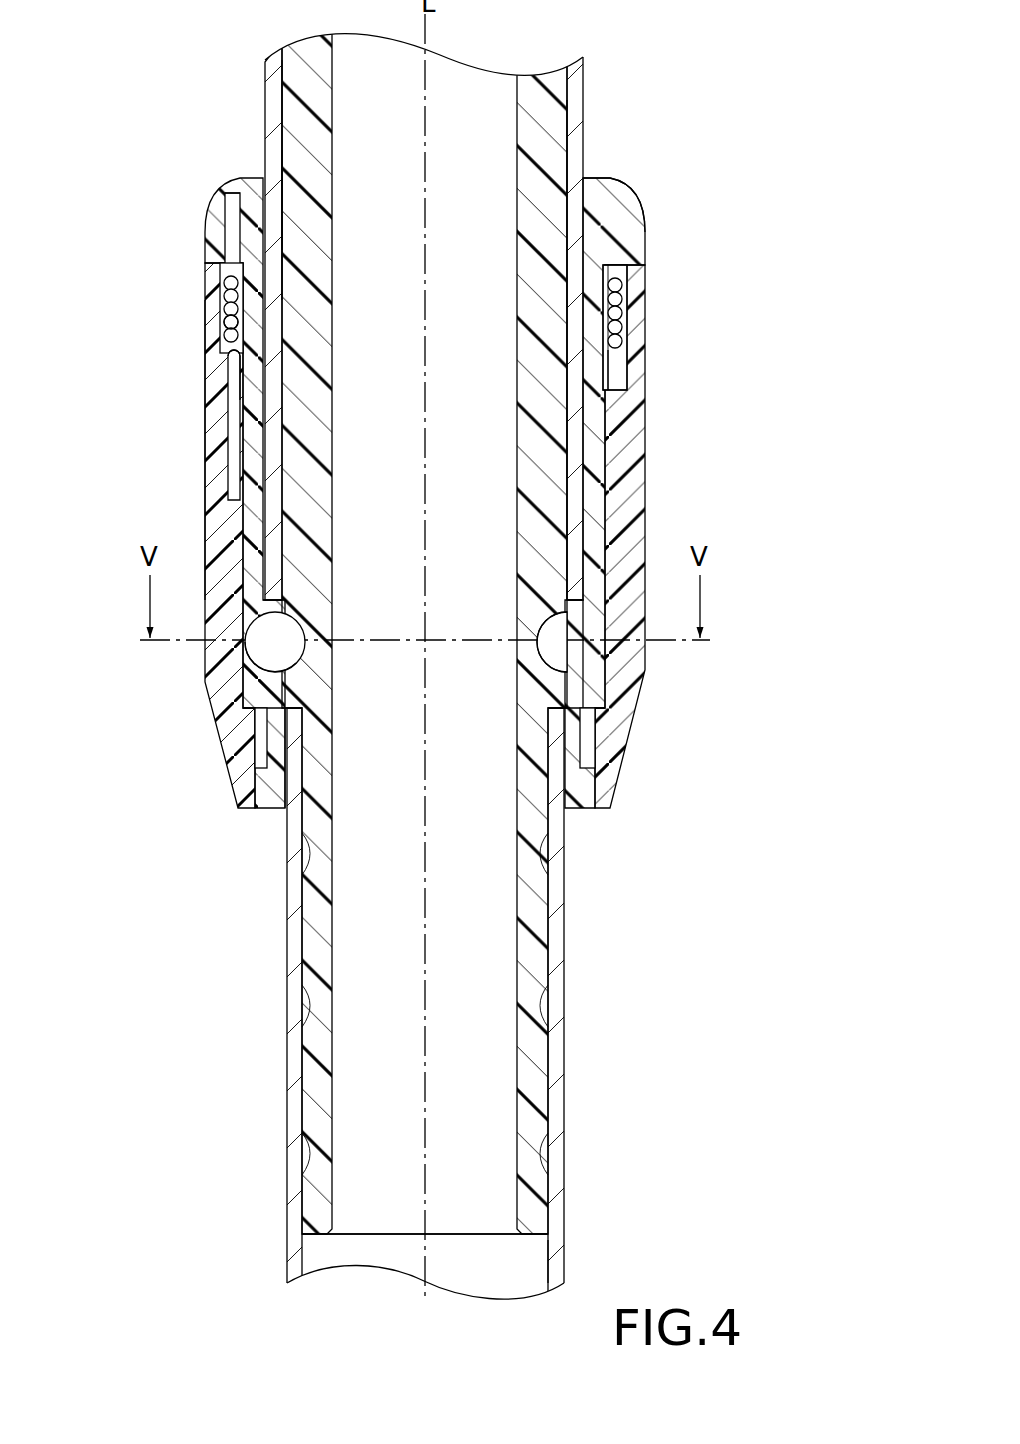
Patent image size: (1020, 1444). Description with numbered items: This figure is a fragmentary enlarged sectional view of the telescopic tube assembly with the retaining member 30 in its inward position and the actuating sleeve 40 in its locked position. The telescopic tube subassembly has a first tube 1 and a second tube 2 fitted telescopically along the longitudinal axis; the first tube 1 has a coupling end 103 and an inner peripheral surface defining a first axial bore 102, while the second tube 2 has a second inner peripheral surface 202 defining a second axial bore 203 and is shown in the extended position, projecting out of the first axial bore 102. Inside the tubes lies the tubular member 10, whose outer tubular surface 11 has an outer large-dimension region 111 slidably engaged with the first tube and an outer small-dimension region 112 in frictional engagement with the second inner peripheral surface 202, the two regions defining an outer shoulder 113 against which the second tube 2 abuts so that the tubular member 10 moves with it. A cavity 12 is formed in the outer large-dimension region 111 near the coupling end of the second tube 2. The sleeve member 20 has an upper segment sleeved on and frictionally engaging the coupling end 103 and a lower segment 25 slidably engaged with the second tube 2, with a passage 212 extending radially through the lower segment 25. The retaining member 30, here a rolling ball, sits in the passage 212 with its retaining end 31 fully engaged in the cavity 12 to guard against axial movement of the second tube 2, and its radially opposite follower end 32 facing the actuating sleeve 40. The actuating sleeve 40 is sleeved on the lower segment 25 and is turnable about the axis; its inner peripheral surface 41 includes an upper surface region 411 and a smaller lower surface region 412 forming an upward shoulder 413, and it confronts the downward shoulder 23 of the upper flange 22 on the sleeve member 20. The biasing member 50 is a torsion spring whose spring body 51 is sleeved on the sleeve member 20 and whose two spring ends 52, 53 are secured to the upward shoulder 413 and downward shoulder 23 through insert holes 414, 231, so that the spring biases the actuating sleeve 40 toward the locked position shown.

The first tube 1 is at (586, 67).
The tubular member 10 is at (569, 139).
The outer tubular surface 11 is at (560, 172).
The first axial bore 102 is at (290, 97).
The coupling end 103 is at (572, 512).
The outer large-dimension region 111 is at (282, 196).
The outer small-dimension region 112 is at (550, 885).
The outer shoulder 113 is at (284, 772).
The second tube 2 is at (563, 991).
The second inner peripheral surface 202 is at (548, 1262).
The second axial bore 203 is at (320, 1253).
The sleeve member 20 is at (609, 386).
The upper flange 22 is at (620, 215).
The downward shoulder 23 is at (614, 262).
The lower segment 25 is at (259, 727).
The passage 212 is at (262, 606).
The insert hole 231 is at (230, 196).
The retaining member 30 is at (247, 660).
The retaining end 31 is at (304, 648).
The follower end 32 is at (248, 648).
The actuating sleeve 40 is at (651, 522).
The inner peripheral surface 41 is at (600, 663).
The upper surface region 411 is at (625, 298).
The lower surface region 412 is at (552, 642).
The upward shoulder 413 is at (620, 352).
The insert hole 414 is at (232, 392).
The biasing member 50 is at (227, 319).
The spring body 51 is at (231, 322).
The spring end 52 is at (232, 248).
The spring end 53 is at (240, 432).
The cavity 12 is at (600, 690).